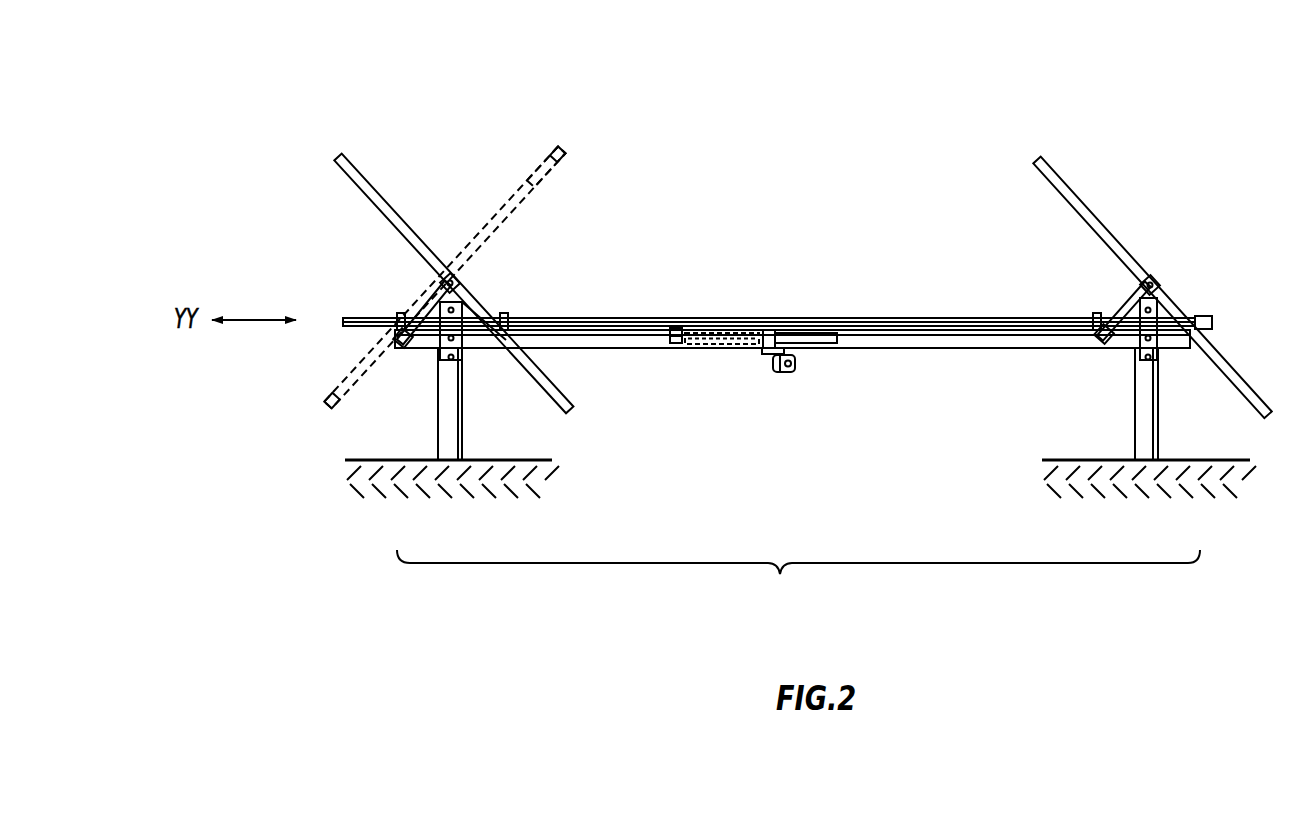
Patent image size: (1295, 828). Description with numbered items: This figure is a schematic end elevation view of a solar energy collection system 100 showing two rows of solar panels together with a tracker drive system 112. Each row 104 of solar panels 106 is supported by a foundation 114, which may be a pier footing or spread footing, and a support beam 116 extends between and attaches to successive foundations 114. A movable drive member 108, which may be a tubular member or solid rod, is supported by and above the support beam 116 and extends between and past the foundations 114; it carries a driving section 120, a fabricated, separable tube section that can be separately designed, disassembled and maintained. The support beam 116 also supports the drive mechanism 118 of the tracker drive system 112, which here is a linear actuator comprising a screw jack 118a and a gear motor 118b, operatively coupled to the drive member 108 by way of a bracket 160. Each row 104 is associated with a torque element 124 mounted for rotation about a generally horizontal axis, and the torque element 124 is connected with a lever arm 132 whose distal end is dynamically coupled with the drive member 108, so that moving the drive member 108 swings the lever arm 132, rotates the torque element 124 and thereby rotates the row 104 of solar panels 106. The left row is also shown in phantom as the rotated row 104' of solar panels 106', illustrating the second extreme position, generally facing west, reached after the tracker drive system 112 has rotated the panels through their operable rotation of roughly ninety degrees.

The solar energy collection system 100 is at (253, 100).
The row of solar panels 104 is at (764, 288).
The rotated row of solar panels 104' is at (606, 140).
The solar panel 106 is at (453, 249).
The rotated solar panel 106' is at (444, 246).
The drive member 108 is at (630, 325).
The tracker drive system 112 is at (780, 576).
The foundation 114 is at (448, 424).
The support beam 116 is at (633, 342).
The drive mechanism 118 is at (751, 360).
The screw jack 118a is at (733, 335).
The gear motor 118b is at (793, 366).
The driving section 120 is at (1163, 330).
The torque element 124 is at (1140, 285).
The lever arm 132 is at (1125, 302).
The bracket 160 is at (678, 330).